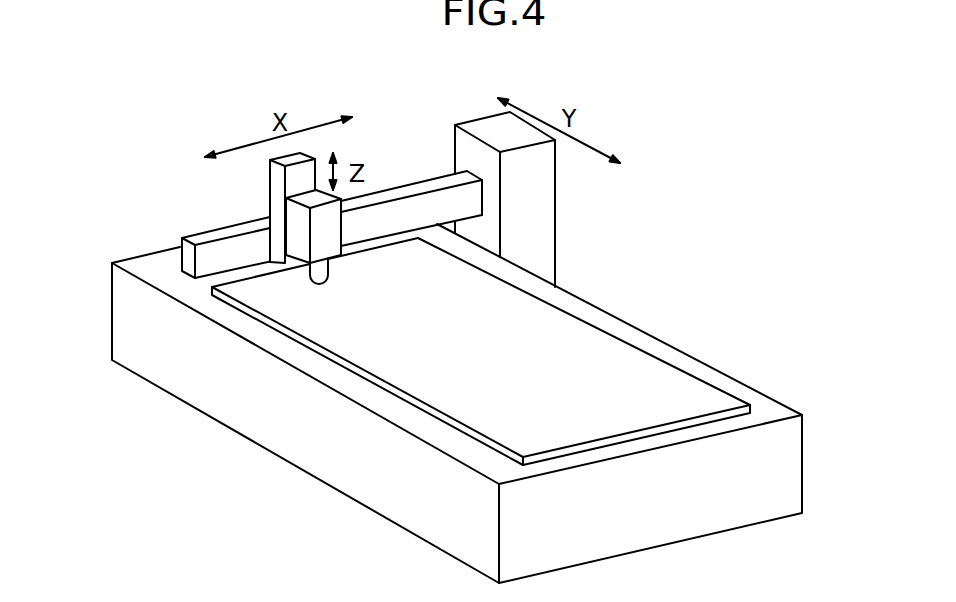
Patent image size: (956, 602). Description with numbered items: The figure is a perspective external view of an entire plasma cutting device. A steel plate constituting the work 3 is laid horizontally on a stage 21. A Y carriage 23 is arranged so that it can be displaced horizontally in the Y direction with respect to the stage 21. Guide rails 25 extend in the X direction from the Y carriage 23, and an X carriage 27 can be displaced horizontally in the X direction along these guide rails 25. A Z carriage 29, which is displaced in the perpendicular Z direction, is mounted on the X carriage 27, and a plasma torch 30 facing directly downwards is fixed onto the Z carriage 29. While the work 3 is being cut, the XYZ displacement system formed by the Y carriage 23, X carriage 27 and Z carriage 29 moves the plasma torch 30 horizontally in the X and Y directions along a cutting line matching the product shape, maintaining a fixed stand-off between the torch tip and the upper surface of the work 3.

The work 3 is at (662, 378).
The stage 21 is at (745, 383).
The Y carriage 23 is at (555, 217).
The guide rails 25 is at (404, 184).
The X carriage 27 is at (268, 190).
The Z carriage 29 is at (332, 233).
The plasma torch 30 is at (328, 270).